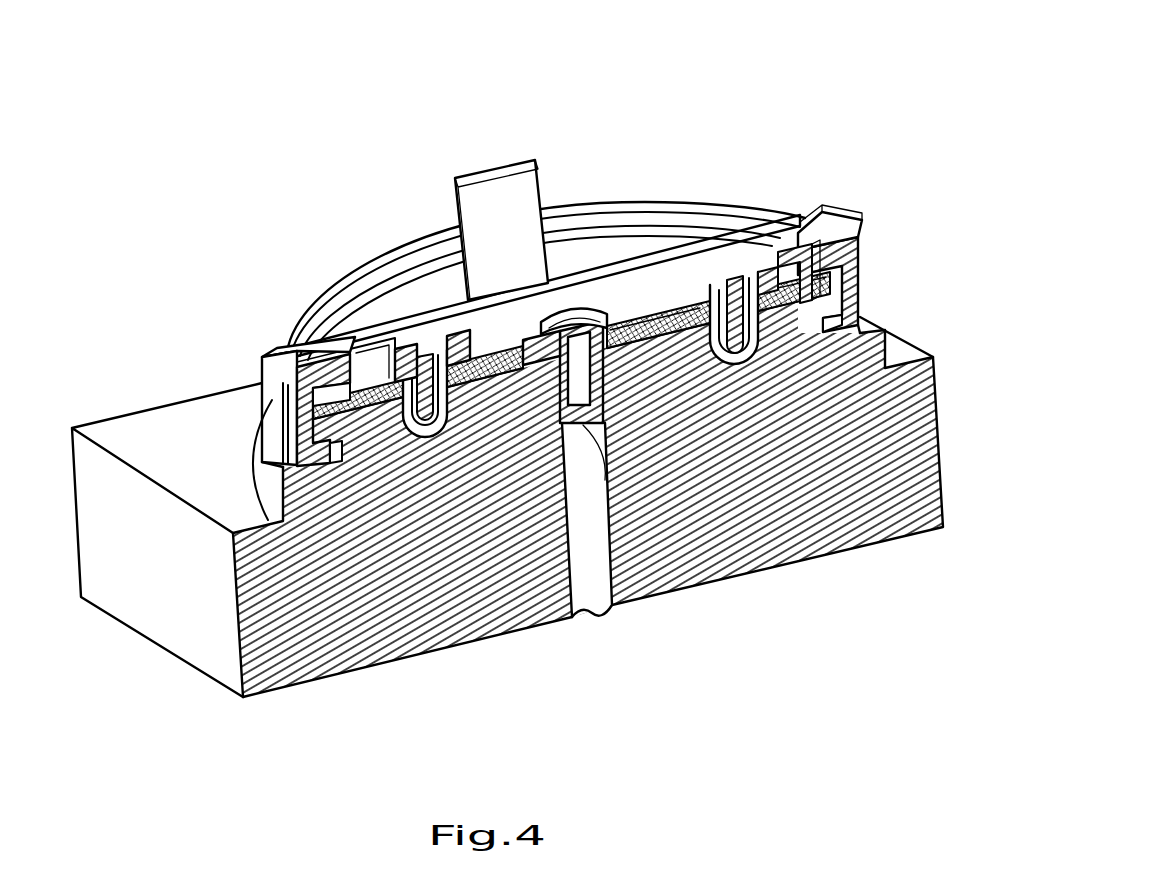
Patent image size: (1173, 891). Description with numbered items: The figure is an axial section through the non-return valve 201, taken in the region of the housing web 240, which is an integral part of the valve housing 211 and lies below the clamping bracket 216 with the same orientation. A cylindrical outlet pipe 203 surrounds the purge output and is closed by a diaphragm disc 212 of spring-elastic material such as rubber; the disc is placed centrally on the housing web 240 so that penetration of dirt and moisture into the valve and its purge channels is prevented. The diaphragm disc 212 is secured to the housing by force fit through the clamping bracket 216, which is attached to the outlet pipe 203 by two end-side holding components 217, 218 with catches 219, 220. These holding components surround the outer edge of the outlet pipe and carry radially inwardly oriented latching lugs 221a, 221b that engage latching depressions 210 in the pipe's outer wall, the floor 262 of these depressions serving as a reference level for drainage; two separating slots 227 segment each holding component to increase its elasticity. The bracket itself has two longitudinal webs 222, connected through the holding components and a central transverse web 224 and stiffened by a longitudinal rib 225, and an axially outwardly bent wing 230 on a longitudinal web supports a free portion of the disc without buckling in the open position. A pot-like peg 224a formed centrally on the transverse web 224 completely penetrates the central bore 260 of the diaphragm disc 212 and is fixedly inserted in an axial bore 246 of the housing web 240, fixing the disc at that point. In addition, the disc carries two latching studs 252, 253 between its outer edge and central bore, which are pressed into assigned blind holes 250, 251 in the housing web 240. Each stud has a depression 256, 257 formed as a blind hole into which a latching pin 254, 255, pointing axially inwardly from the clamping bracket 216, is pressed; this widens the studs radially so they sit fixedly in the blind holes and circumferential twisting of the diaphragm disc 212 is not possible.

The non-return valve 201 is at (805, 150).
The outlet pipe 203 is at (856, 292).
The latching depressions 210 is at (340, 447).
The valve housing 211 is at (162, 597).
The diaphragm disc 212 is at (385, 383).
The clamping bracket 216 is at (872, 236).
The holding component 217 is at (303, 330).
The holding component 218 is at (827, 233).
The catch 219 is at (262, 455).
The catch 220 is at (885, 309).
The latching lug 221a is at (262, 432).
The latching lug 221b is at (840, 303).
The longitudinal web 222 is at (367, 370).
The transverse web 224 is at (695, 330).
The peg 224a is at (608, 425).
The longitudinal rib 225 is at (583, 275).
The separating slots 227 is at (270, 447).
The wing 230 is at (500, 162).
The housing web 240 is at (824, 345).
The axial bore 246 is at (594, 605).
The blind hole 250 is at (450, 430).
The blind hole 251 is at (765, 335).
The latching stud 252 is at (550, 335).
The latching stud 253 is at (660, 305).
The latching pin 254 is at (457, 357).
The latching pin 255 is at (767, 300).
The depression 256 is at (424, 400).
The depression 257 is at (730, 300).
The central bore 260 is at (628, 340).
The floor 262 is at (275, 452).